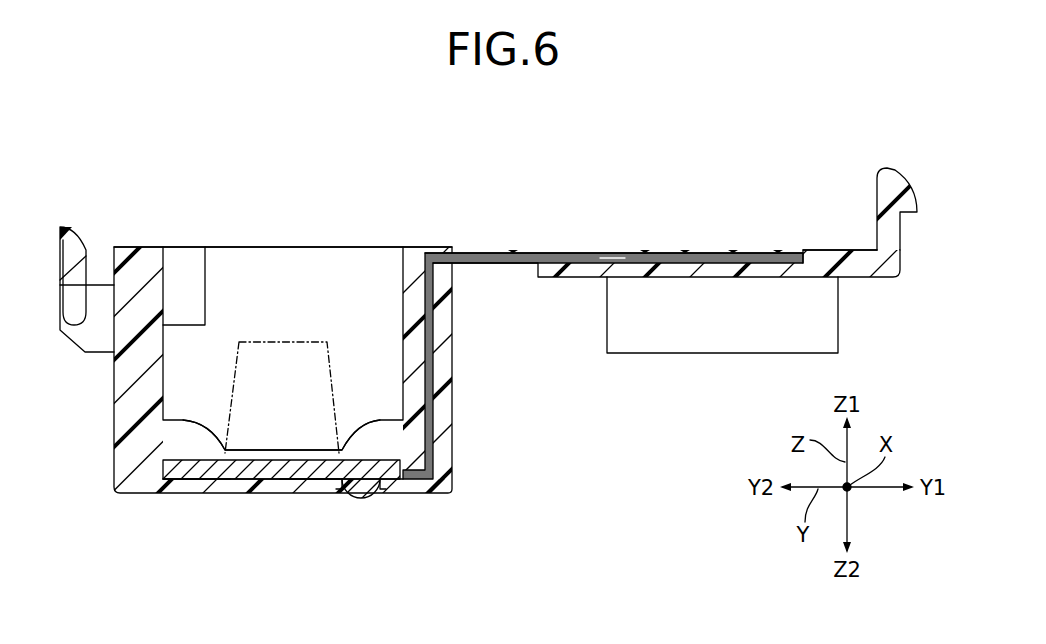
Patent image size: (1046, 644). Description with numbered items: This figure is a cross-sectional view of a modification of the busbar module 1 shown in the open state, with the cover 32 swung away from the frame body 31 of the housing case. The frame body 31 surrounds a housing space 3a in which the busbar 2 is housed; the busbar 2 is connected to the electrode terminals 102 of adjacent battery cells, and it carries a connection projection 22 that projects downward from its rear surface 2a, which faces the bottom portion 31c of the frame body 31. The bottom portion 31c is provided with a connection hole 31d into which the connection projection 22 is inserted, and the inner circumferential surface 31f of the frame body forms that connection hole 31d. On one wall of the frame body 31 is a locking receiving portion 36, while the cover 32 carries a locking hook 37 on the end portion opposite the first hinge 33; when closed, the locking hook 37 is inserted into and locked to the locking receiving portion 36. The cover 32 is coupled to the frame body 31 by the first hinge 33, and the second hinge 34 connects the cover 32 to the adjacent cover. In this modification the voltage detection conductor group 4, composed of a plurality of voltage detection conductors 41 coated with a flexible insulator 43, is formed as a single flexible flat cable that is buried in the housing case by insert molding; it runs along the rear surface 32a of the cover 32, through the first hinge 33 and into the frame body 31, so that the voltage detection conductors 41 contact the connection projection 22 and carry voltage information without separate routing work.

The busbar module 1 is at (168, 163).
The busbar 2 is at (183, 452).
The rear surface 2a is at (237, 485).
The housing space 3a is at (237, 265).
The voltage detection conductor group 4 is at (582, 212).
The connection projection 22 is at (367, 490).
The frame body 31 is at (453, 408).
The bottom portion 31c is at (195, 486).
The connection hole 31d is at (316, 488).
The inner circumferential surface 31f is at (340, 484).
The cover 32 is at (858, 268).
The rear surface 32a is at (828, 250).
The first hinge 33 is at (507, 274).
The second hinge 34 is at (727, 340).
The locking receiving portion 36 is at (84, 240).
The locking hook 37 is at (895, 185).
The voltage detection conductor 41 is at (513, 250).
The insulator 43 is at (610, 258).
The electrode terminal 102 is at (289, 342).